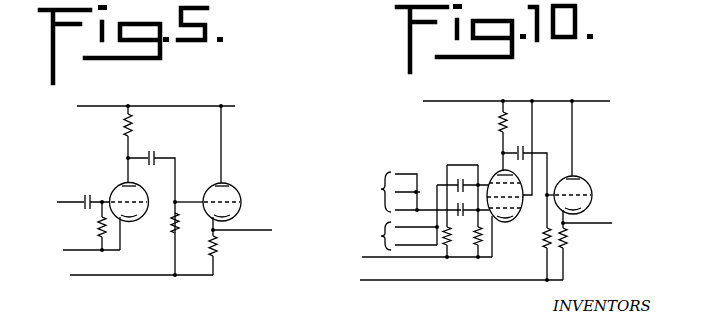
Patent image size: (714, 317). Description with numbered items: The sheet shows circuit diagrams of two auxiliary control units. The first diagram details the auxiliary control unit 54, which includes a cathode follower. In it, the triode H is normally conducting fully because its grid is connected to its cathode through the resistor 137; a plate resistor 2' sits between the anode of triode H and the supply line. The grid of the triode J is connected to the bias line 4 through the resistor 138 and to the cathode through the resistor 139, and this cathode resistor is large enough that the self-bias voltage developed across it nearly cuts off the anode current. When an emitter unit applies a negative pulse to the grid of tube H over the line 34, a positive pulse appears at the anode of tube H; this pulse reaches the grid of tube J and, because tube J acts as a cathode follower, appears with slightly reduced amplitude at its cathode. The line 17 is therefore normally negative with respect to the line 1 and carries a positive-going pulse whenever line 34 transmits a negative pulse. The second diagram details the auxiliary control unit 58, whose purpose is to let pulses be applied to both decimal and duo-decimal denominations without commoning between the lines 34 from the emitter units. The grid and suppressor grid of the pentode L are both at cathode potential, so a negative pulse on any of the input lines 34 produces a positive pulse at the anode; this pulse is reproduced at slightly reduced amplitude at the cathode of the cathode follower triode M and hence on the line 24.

In FIG. 5, the auxiliary control unit 54 is at (158, 100).
In FIG. 10, the auxiliary control unit 58 is at (528, 95).
In FIG. 5, the plate resistor 2' is at (145, 144).
In FIG. 5, the line 34 is at (68, 202).
In FIG. 10, the line 34 is at (398, 211).
In FIG. 5, the resistor 137 is at (98, 222).
In FIG. 5, the resistor 138 is at (172, 218).
In FIG. 5, the resistor 139 is at (220, 245).
In FIG. 5, the line 1 is at (91, 242).
In FIG. 10, the line 1 is at (419, 258).
In FIG. 5, the bias line 4 is at (72, 275).
In FIG. 10, the bias line 4 is at (452, 285).
In FIG. 5, the line 17 is at (255, 230).
In FIG. 10, the line 24 is at (604, 224).
In FIG. 5, the triode H is at (123, 211).
In FIG. 5, the triode J is at (225, 171).
In FIG. 10, the pentode L is at (505, 213).
In FIG. 10, the cathode follower triode M is at (580, 190).